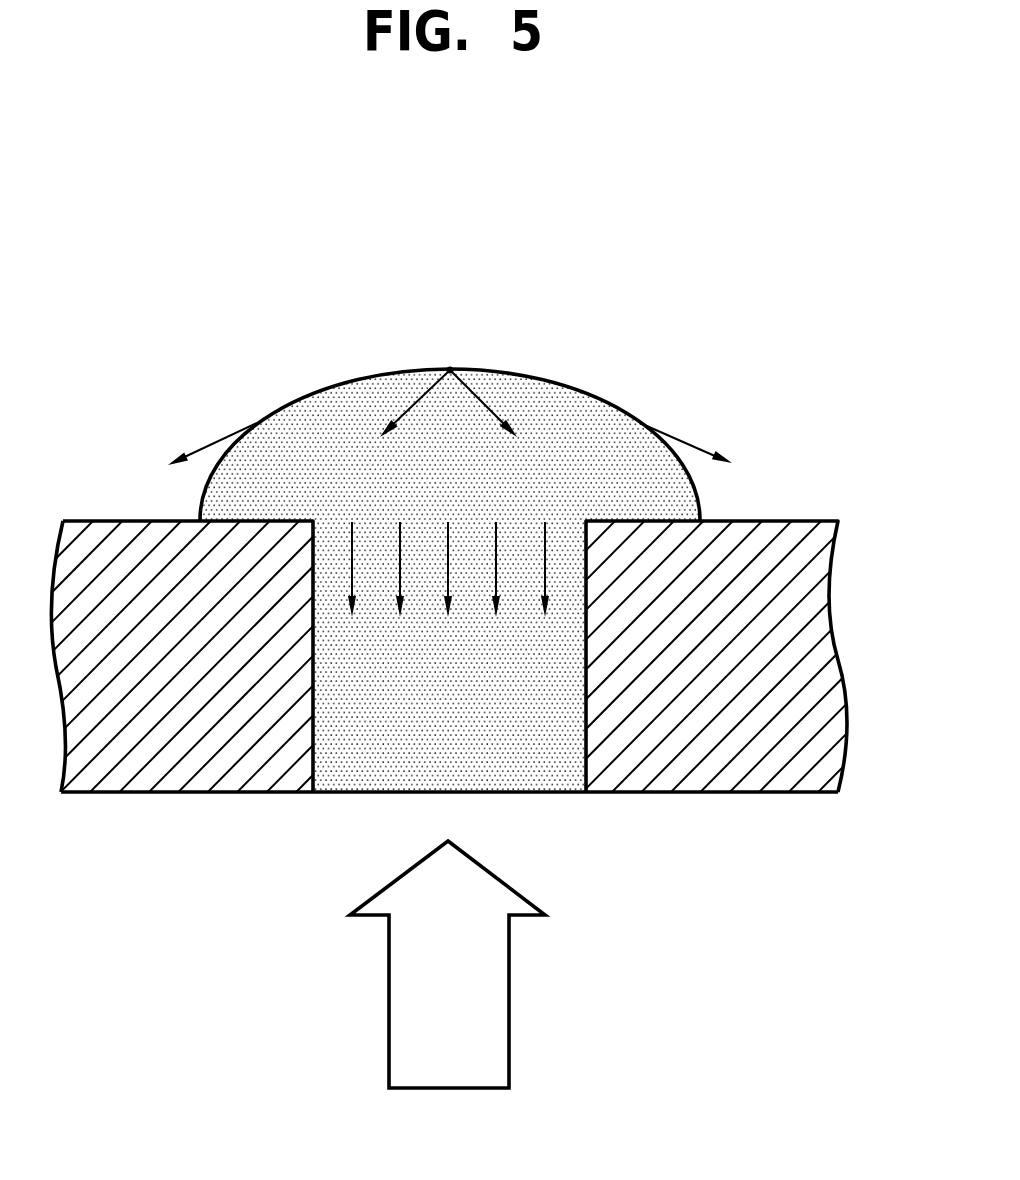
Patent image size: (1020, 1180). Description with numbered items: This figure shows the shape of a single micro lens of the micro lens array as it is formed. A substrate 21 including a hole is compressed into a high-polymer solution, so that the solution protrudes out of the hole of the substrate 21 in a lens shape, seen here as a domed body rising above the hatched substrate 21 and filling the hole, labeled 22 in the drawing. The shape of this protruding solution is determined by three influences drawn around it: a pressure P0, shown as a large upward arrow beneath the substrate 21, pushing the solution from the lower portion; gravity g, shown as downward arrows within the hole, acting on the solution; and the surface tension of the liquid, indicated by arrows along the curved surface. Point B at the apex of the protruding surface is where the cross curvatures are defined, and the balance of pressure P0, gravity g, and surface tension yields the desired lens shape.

The substrate 21 is at (830, 672).
The ink 22 is at (700, 490).
The point B at the apex B is at (448, 383).
The gravity g is at (448, 613).
The pressure P0 is at (447, 993).